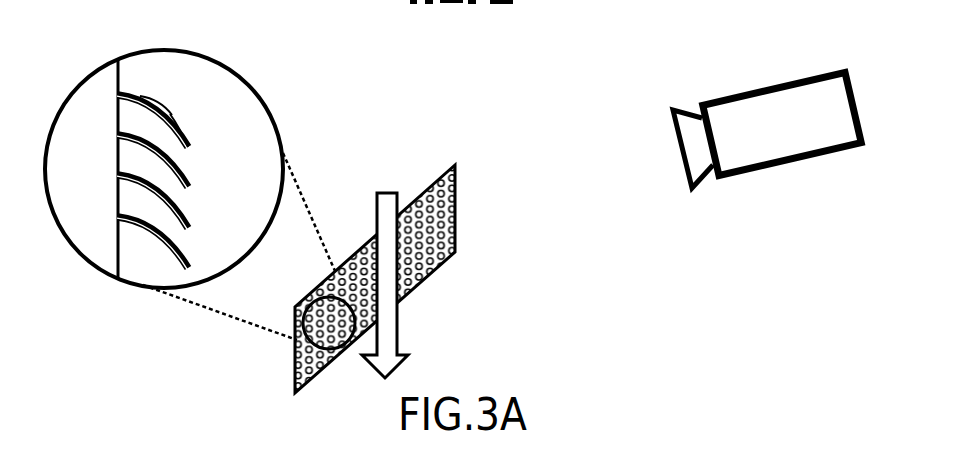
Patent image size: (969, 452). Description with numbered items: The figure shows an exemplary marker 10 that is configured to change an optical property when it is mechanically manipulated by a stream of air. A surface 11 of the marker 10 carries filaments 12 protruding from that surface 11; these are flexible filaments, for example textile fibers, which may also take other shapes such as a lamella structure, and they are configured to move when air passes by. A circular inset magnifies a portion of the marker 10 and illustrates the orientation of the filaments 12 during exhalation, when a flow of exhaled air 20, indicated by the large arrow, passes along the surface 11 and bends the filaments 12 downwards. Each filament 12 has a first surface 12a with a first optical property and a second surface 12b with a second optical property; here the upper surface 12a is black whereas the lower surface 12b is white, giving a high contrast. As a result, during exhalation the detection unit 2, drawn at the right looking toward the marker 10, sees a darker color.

The detection unit 2 is at (790, 163).
The marker 10 is at (456, 193).
The surface 11 is at (117, 237).
The filaments 12 is at (137, 93).
The first surface 12a is at (162, 110).
The second surface 12b is at (186, 139).
The flow of exhaled air 20 is at (388, 340).